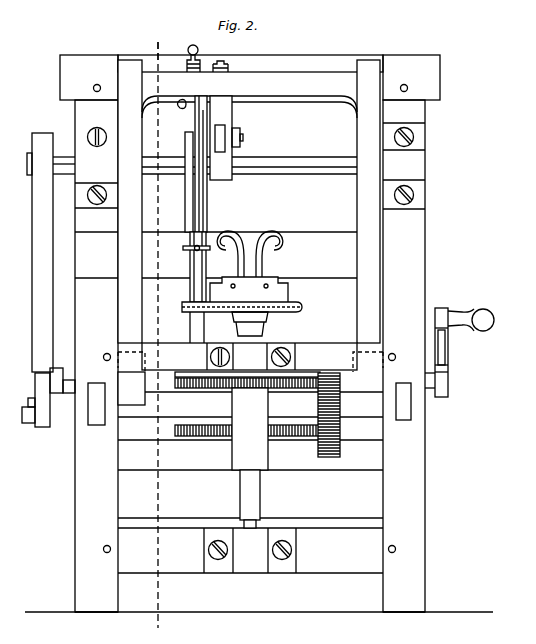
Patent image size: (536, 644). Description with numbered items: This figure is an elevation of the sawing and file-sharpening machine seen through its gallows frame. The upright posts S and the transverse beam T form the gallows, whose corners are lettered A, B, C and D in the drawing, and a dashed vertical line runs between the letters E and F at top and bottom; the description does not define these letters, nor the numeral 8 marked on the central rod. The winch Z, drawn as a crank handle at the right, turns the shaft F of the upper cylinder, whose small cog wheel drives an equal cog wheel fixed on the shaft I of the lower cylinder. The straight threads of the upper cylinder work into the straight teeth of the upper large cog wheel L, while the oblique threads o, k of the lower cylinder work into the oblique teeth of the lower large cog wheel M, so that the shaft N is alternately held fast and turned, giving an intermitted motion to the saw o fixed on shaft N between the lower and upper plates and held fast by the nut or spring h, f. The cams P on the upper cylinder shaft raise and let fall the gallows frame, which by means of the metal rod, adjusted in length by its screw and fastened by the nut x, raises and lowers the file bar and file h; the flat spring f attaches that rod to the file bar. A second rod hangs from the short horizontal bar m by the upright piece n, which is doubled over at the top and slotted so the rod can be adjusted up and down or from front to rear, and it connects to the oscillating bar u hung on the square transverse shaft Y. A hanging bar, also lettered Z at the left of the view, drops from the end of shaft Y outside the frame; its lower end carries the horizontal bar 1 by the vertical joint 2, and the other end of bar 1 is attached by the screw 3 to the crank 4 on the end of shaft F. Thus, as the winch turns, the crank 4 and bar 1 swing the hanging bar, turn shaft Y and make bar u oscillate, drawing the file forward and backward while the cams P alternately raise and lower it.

The frame side post / lever A is at (64, 333).
The lower left frame post B is at (96, 600).
The upper right frame post C is at (411, 333).
The lower right frame post D is at (404, 601).
The section line E is at (162, 43).
The shaft of the upper cylinder F is at (150, 341).
The upright posts S is at (249, 201).
The transverse beam T is at (249, 99).
The square transverse shaft Y is at (205, 165).
The winch Z is at (258, 280).
The short horizontal bar m is at (207, 52).
The nut x is at (179, 110).
The oscillating bar u is at (193, 164).
The upright piece of metal n is at (226, 163).
The pin block 8 is at (196, 267).
The file h is at (190, 298).
The flat spring f is at (250, 265).
The oblique thread of the lower cylinder k is at (249, 289).
The saw o is at (302, 307).
The cams P is at (131, 388).
The upper large cog wheel L is at (247, 390).
The lower large cog wheel M is at (251, 422).
The shaft N is at (250, 499).
The shaft of the lower cylinder I is at (336, 415).
The horizontal bar 1 is at (42, 393).
The vertical joint 2 is at (60, 397).
The screw 3 is at (21, 410).
The crank 4 is at (54, 405).